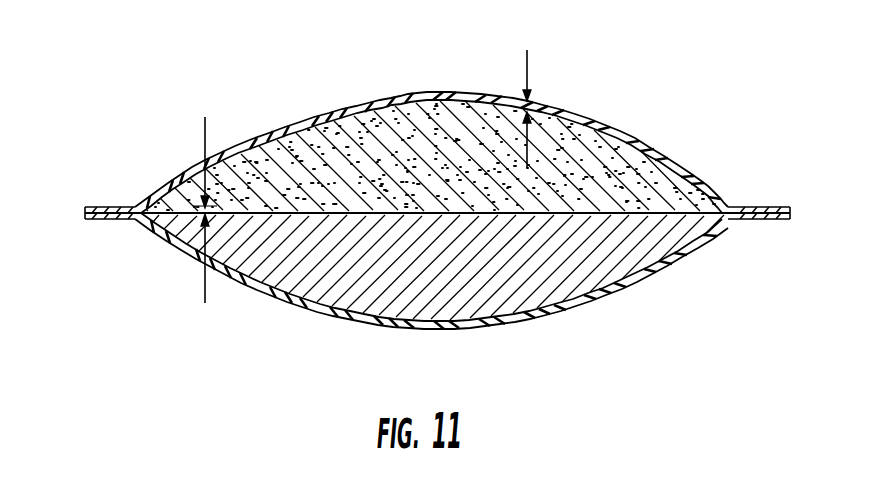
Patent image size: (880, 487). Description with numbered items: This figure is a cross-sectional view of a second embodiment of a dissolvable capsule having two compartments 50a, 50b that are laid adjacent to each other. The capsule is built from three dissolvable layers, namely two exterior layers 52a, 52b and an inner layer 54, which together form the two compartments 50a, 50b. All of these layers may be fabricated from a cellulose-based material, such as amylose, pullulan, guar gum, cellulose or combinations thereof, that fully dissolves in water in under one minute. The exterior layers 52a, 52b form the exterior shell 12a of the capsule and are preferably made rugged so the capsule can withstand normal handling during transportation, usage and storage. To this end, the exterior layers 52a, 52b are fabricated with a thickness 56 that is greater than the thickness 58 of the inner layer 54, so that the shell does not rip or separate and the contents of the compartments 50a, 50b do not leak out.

The exterior shell 12a is at (712, 175).
The dissolvable layer 52a is at (413, 95).
The dissolvable layer 52b is at (356, 321).
The compartment 50a is at (595, 174).
The compartment 50b is at (577, 272).
The inner layer 54 is at (312, 213).
The thickness of exterior layers 56 is at (528, 72).
The thickness of inner layer 58 is at (205, 288).